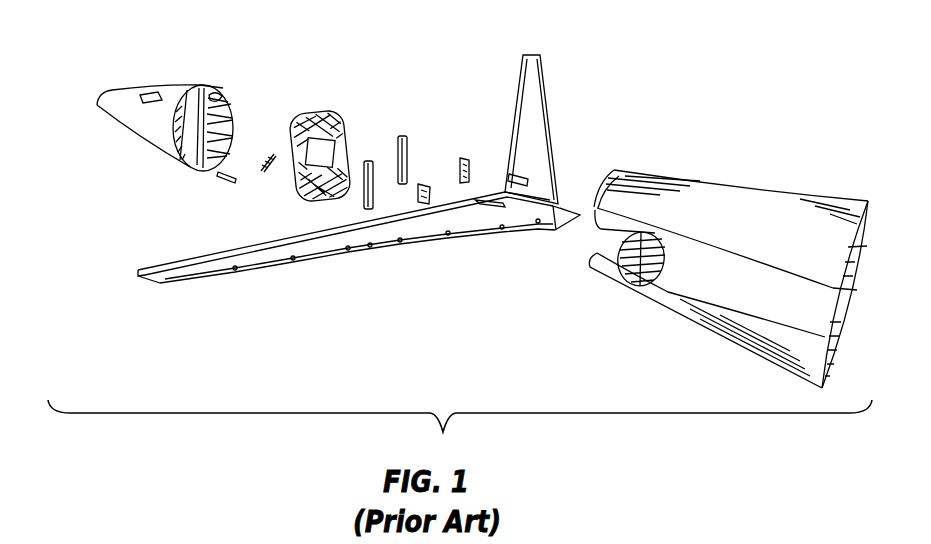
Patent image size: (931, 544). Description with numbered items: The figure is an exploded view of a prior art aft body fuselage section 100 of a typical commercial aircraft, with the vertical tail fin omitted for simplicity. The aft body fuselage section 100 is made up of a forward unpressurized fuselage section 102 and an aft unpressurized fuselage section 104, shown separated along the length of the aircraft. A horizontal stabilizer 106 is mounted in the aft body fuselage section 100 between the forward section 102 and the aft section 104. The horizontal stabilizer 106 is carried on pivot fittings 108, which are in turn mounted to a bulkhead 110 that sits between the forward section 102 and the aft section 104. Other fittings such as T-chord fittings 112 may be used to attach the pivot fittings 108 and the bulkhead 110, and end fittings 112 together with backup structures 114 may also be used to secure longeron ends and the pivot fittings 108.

The aft body fuselage section 100 is at (678, 60).
The forward unpressurized fuselage section 102 is at (747, 192).
The aft unpressurized fuselage section 104 is at (123, 110).
The horizontal stabilizer 106 is at (277, 248).
The pivot fittings 108 is at (464, 156).
The bulkhead 110 is at (325, 110).
The T-chord fittings 112 is at (267, 150).
The backup structures 114 is at (216, 96).